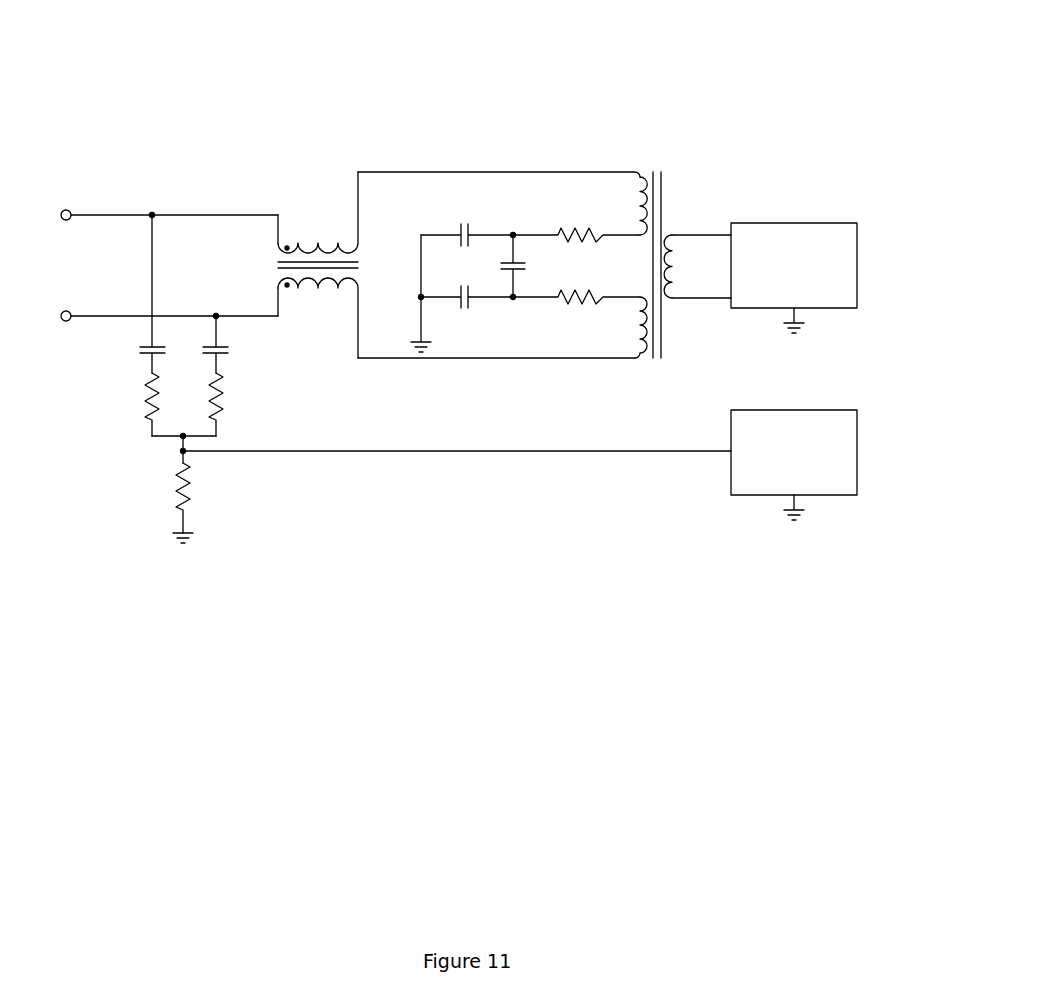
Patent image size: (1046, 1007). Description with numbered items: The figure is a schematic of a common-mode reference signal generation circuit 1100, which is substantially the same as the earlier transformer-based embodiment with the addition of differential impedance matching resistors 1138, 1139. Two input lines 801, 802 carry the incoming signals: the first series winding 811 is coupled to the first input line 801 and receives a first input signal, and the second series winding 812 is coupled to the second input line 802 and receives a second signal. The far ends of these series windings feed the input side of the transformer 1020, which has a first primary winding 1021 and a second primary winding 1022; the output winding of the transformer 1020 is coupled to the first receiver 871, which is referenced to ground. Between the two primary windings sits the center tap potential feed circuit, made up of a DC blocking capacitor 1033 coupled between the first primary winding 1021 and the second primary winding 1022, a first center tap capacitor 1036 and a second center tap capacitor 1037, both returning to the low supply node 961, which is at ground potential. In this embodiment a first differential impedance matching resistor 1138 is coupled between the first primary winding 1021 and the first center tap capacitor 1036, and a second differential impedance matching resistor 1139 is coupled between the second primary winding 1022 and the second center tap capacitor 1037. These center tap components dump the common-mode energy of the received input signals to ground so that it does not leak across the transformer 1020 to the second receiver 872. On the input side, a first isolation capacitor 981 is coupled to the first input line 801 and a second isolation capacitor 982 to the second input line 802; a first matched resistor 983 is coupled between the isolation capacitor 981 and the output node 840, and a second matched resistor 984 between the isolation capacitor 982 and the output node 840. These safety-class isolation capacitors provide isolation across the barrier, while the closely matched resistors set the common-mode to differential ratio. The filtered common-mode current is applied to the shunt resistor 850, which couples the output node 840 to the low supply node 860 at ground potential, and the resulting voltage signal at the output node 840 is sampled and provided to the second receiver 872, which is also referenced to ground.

The circuit 1100 is at (403, 70).
The first input line 801 is at (67, 209).
The second input line 802 is at (67, 310).
The first series winding 811 is at (300, 242).
The second series winding 812 is at (318, 290).
The first isolation capacitor 981 is at (139, 350).
The second isolation capacitor 982 is at (229, 350).
The first matched resistor 983 is at (144, 396).
The second matched resistor 984 is at (225, 393).
The output node 840 is at (181, 451).
The shunt resistor 850 is at (179, 492).
The low supply node 860 is at (185, 527).
The low supply node 961 is at (420, 298).
The first center tap capacitor 1036 is at (458, 234).
The second center tap capacitor 1037 is at (458, 299).
The DC blocking capacitor 1033 is at (500, 266).
The first differential impedance matching resistor 1138 is at (588, 238).
The second differential impedance matching resistor 1139 is at (586, 296).
The first primary winding 1021 is at (637, 208).
The second primary winding 1022 is at (638, 332).
The transformer 1020 is at (657, 170).
The first receiver 871 is at (858, 265).
The second receiver 872 is at (858, 452).